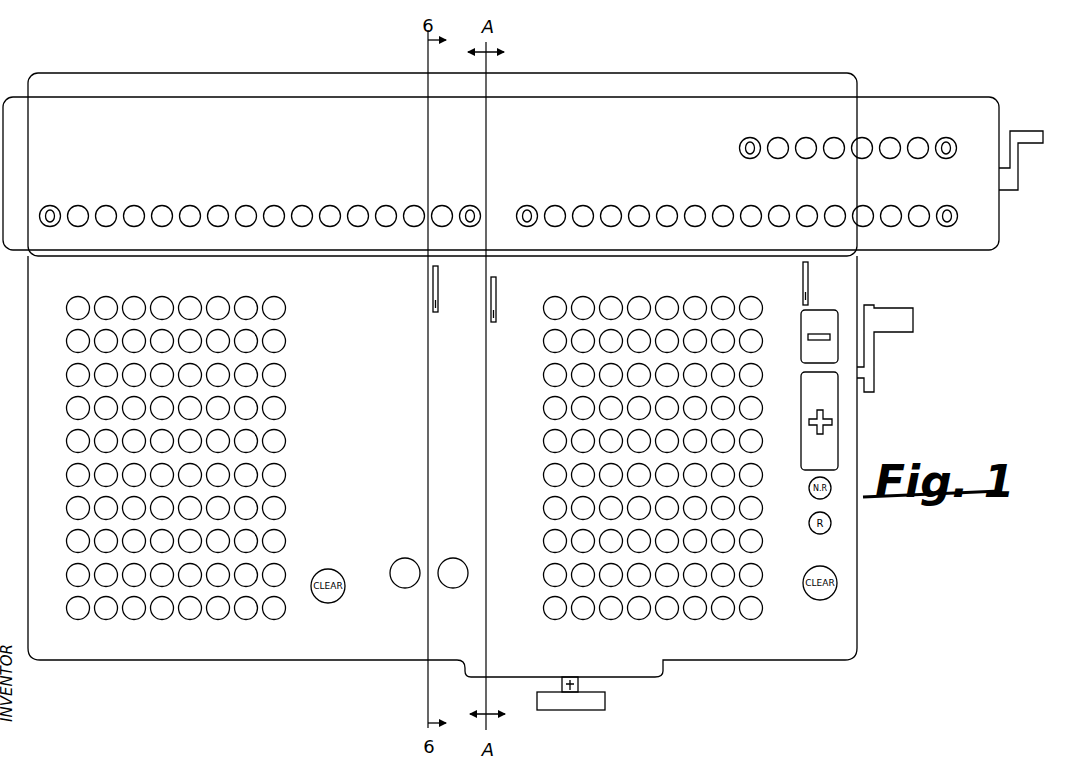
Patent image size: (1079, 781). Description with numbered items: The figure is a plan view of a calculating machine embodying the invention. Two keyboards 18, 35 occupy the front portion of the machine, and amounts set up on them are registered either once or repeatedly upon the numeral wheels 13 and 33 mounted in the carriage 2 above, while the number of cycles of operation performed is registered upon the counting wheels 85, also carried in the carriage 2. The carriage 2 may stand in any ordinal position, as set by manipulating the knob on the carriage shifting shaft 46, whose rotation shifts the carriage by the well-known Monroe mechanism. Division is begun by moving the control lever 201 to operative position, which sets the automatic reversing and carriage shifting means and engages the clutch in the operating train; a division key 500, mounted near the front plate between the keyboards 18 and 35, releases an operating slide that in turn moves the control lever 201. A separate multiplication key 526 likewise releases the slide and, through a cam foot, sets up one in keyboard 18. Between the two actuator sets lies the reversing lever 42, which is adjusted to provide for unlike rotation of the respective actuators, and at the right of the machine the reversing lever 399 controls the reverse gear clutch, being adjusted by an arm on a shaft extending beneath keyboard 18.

The carriage 2 is at (948, 103).
The counting wheels 85 is at (864, 145).
The numeral wheels 33 is at (275, 214).
The numeral wheels 13 is at (582, 213).
The reversing lever 42 is at (433, 302).
The control lever 201 is at (495, 320).
The reversing lever 399 is at (803, 300).
The keyboard 35 is at (218, 616).
The keyboard 18 is at (700, 616).
The division key 500 is at (397, 588).
The multiplication key 526 is at (452, 590).
The carriage shifting shaft 46 is at (588, 692).